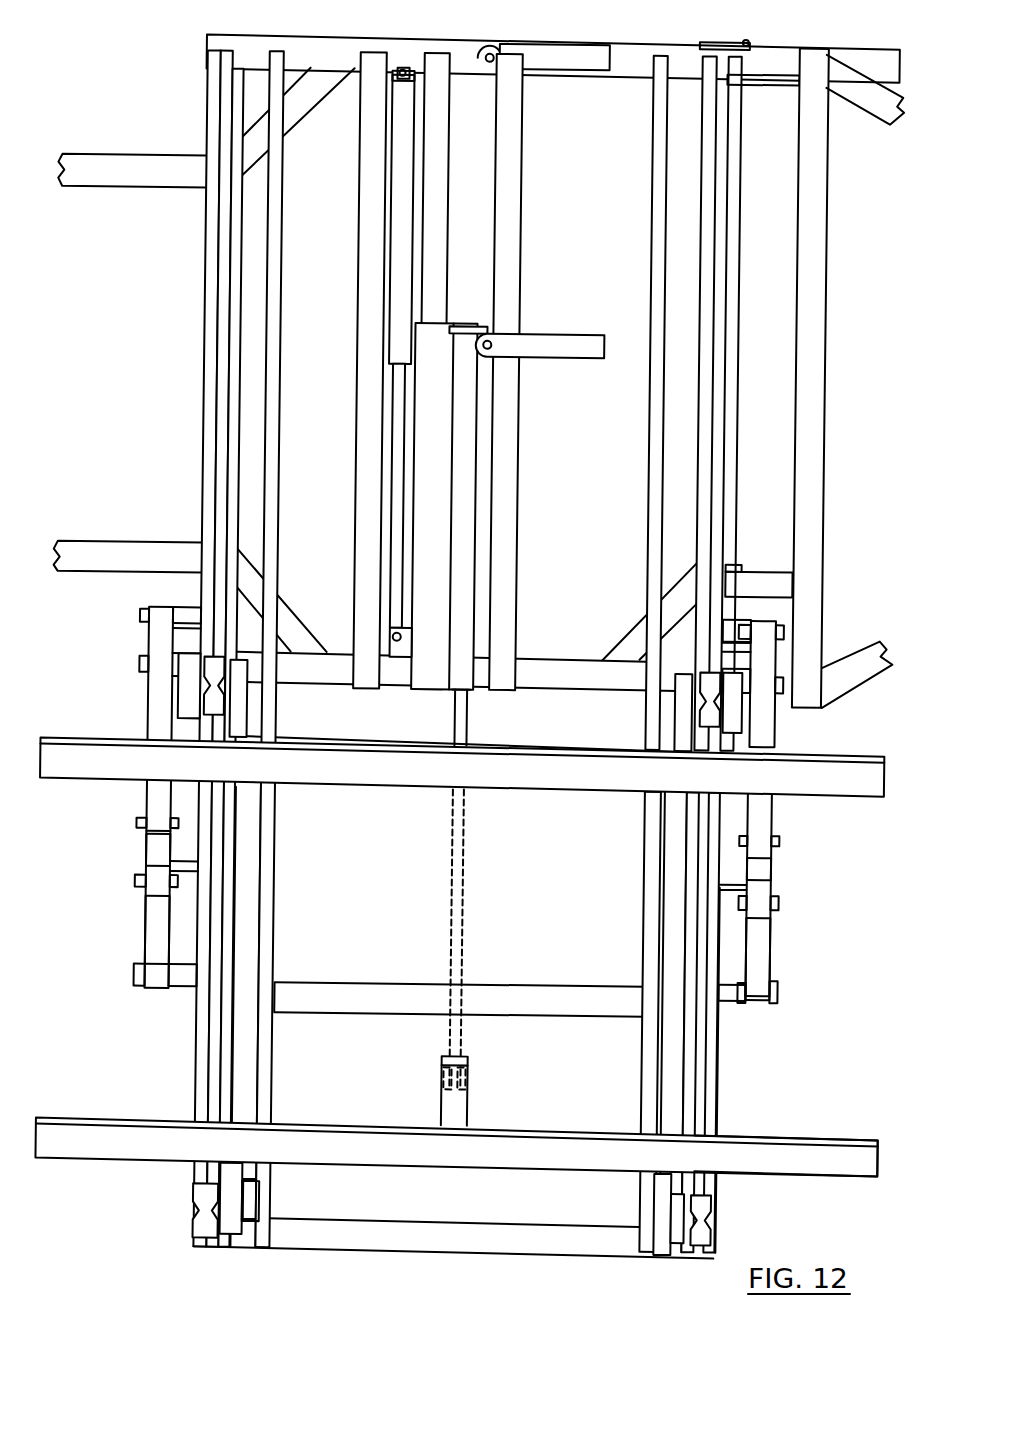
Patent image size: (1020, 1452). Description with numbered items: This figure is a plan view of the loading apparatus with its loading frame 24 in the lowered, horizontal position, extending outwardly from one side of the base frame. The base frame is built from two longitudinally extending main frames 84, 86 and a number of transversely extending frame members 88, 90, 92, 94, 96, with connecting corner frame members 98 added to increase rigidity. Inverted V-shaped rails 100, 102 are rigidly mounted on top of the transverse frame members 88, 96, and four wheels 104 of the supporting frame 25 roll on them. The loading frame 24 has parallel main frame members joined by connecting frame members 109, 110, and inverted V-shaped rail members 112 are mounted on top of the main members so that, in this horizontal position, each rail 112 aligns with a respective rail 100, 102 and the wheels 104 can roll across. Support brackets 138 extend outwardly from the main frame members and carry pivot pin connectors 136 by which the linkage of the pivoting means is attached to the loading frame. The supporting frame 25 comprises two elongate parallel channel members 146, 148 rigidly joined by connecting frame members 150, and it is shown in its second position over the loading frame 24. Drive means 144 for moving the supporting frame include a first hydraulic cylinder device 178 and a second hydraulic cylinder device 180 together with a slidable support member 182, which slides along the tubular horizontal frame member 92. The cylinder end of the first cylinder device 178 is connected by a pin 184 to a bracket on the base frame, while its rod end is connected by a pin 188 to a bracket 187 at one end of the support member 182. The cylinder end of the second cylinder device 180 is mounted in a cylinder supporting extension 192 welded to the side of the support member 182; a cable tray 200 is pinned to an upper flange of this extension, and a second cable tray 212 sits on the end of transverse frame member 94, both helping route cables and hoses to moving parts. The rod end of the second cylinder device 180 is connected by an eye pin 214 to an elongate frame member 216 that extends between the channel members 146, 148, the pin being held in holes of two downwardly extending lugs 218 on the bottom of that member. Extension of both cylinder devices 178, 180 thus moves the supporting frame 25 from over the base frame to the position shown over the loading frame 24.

The loading frame 24 is at (719, 1096).
The supporting frame 25 is at (845, 1141).
The main frame 84 is at (560, 666).
The main frame 86 is at (462, 55).
The transverse frame member 88 is at (228, 335).
The transverse frame member 90 is at (357, 257).
The transverse frame member 92 is at (431, 234).
The transverse frame member 94 is at (504, 230).
The transverse frame member 96 is at (732, 256).
The corner frame member 98 is at (288, 109).
The inverted V-shaped rail 100 is at (214, 405).
The inverted V-shaped rail 102 is at (730, 448).
The wheel 104 is at (206, 1192).
The connecting frame member 109 is at (537, 1253).
The connecting frame member 110 is at (553, 1000).
The inverted V-shaped rail member 112 is at (722, 1068).
The pivot pin connector 136 is at (783, 990).
The support bracket 138 is at (192, 990).
The drive means 144 is at (388, 331).
The channel member 146 is at (353, 1142).
The channel member 148 is at (545, 765).
The connecting frame member 150 is at (251, 1054).
The first hydraulic cylinder device 178 is at (390, 173).
The second hydraulic cylinder device 180 is at (468, 549).
The slidable support member 182 is at (434, 491).
The pin 184 is at (394, 69).
The bracket 187 is at (402, 647).
The pin 188 is at (390, 638).
The cylinder supporting extension 192 is at (482, 322).
The cable tray 200 is at (553, 350).
The second cable tray 212 is at (562, 57).
The eye pin 214 is at (480, 1063).
The elongate frame member 216 is at (478, 1112).
The lug 218 is at (447, 1074).